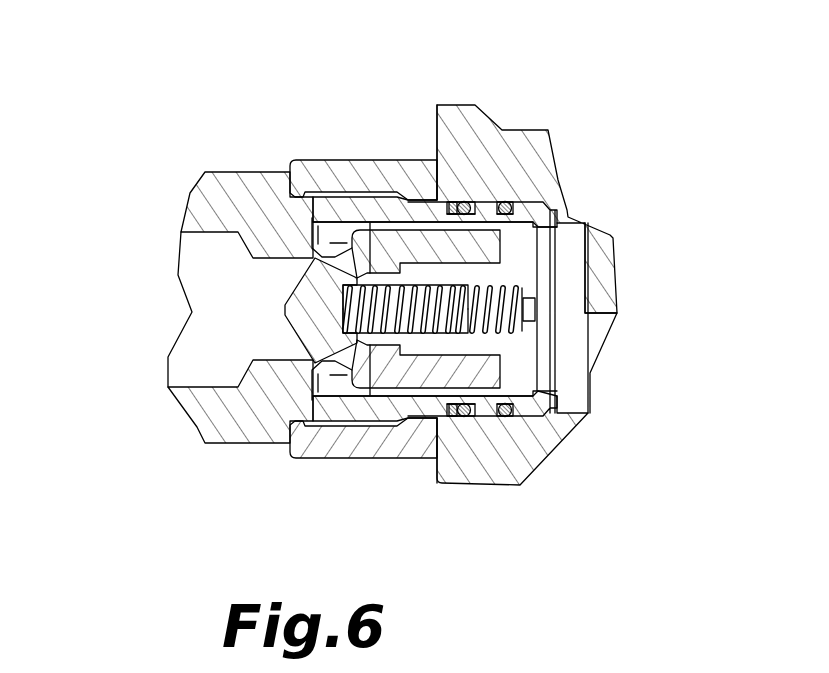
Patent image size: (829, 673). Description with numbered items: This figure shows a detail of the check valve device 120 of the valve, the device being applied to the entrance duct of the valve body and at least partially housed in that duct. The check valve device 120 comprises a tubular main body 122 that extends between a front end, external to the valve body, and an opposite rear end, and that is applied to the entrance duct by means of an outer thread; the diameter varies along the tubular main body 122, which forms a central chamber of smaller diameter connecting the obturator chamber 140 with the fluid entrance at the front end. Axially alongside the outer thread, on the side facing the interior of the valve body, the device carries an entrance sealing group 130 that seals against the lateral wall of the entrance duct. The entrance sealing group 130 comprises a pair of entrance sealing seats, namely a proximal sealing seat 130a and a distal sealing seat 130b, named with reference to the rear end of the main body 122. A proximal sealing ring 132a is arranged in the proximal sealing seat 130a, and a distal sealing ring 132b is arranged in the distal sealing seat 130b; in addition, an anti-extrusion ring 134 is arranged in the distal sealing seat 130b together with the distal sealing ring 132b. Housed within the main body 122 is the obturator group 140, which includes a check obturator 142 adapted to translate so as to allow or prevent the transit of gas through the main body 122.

The check valve device 120 is at (258, 452).
The tubular main body 122 is at (372, 205).
The entrance sealing group 130 is at (487, 190).
The proximal sealing seat 130a is at (508, 426).
The distal sealing seat 130b is at (472, 428).
The proximal sealing ring 132a is at (588, 410).
The distal sealing ring 132b is at (466, 403).
The anti-extrusion ring 134 is at (463, 417).
The obturator group 140 is at (421, 372).
The check obturator 142 is at (316, 295).